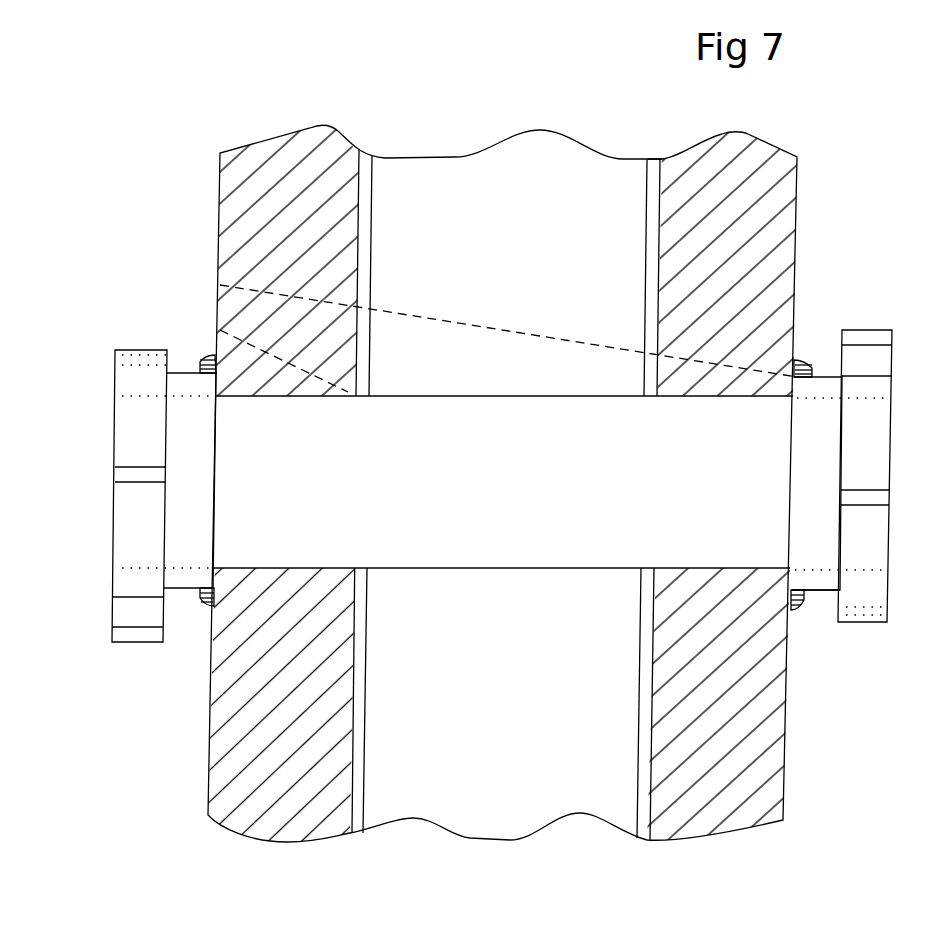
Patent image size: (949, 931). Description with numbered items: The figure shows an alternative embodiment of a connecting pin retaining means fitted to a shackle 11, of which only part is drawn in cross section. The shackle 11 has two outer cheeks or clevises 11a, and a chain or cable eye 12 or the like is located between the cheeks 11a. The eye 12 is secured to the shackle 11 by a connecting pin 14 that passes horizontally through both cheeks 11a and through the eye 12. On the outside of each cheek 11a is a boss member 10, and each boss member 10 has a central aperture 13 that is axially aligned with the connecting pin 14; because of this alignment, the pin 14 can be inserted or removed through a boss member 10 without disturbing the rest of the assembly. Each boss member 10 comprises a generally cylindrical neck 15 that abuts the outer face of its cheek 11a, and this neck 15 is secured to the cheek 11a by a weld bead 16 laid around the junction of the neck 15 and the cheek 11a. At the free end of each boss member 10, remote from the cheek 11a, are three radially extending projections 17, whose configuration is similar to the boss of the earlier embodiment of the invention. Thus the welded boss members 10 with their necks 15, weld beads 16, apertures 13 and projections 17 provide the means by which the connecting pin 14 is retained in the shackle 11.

The boss member 10 is at (113, 515).
The shackle 11 is at (773, 143).
The outer cheek 11a is at (245, 240).
The chain or cable eye 12 is at (540, 155).
The central aperture 13 is at (817, 557).
The connecting pin 14 is at (563, 518).
The cylindrical neck 15 is at (177, 590).
The weld bead 16 is at (207, 608).
The radially extending projection 17 is at (858, 337).